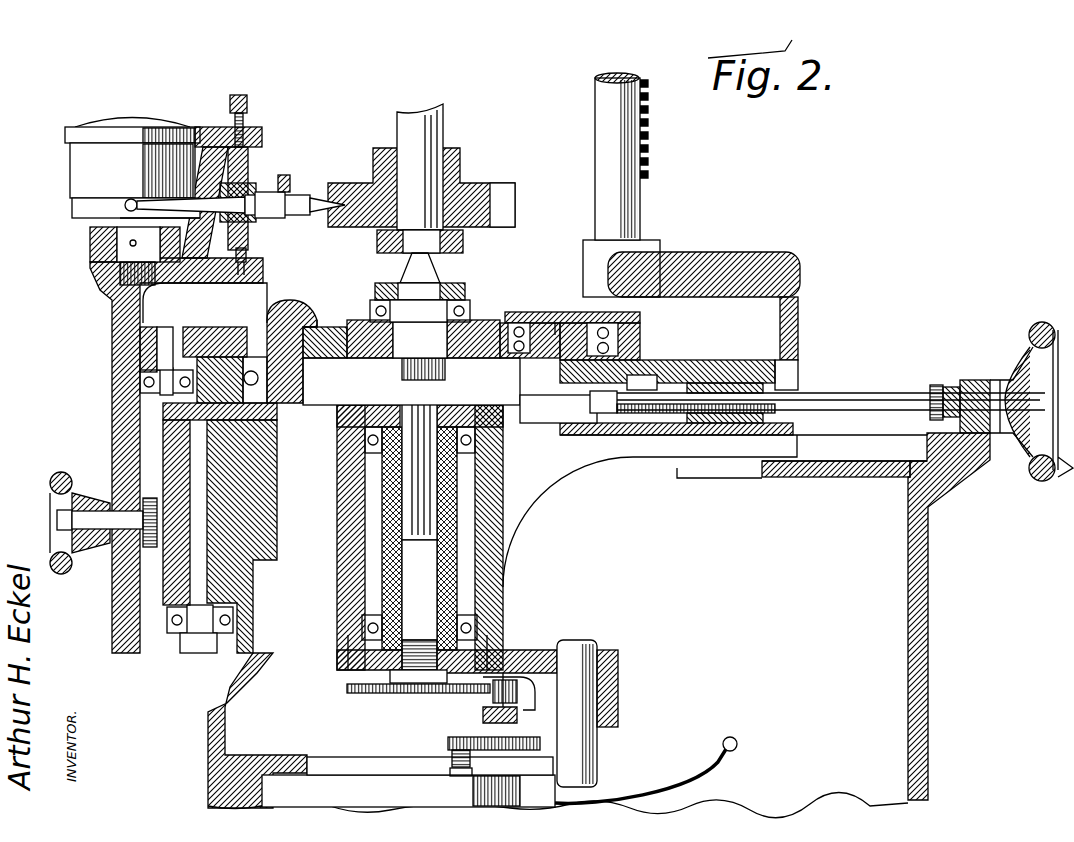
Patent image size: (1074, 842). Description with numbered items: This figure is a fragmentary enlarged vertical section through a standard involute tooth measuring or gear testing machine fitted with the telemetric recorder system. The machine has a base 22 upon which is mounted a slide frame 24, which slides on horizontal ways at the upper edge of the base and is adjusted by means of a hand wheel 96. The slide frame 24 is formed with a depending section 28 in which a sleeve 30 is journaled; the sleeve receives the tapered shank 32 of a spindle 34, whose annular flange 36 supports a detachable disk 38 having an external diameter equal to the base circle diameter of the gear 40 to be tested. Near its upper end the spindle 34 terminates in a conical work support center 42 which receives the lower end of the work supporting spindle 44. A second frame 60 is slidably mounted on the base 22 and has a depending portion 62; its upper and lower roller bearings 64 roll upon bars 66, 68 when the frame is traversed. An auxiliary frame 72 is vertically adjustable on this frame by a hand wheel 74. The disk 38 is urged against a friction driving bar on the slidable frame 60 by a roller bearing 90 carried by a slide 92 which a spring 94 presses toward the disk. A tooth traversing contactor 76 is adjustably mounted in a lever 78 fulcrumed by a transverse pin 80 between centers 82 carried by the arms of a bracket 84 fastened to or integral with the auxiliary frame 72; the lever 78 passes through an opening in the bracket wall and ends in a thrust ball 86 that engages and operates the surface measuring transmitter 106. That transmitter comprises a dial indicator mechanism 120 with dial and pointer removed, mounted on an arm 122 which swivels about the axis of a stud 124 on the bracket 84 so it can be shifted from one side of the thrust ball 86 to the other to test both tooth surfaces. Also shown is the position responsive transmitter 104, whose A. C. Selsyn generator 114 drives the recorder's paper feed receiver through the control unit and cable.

The base 22 is at (210, 728).
The slide frame 24 is at (740, 254).
The depending section 28 is at (483, 553).
The sleeve 30 is at (450, 523).
The tapered shank 32 is at (437, 480).
The spindle 34 is at (480, 320).
The annular flange 36 is at (375, 373).
The disk 38 is at (355, 323).
The gear 40 is at (463, 183).
The conical work support center 42 is at (400, 270).
The work supporting spindle 44 is at (440, 128).
The frame 60 is at (274, 285).
The depending portion 62 is at (183, 500).
The roller bearings 64 is at (125, 380).
The bar 66 is at (243, 622).
The bar 68 is at (267, 322).
The auxiliary frame 72 is at (110, 306).
The hand wheel 74 is at (63, 573).
The tooth traversing contactor 76 is at (310, 200).
The lever 78 is at (256, 186).
The transverse pin 80 is at (250, 160).
The centers 82 is at (246, 112).
The bracket 84 is at (198, 278).
The thrust ball 86 is at (143, 217).
The roller bearing 90 is at (620, 327).
The slide 92 is at (650, 362).
The spring 94 is at (675, 390).
The hand wheel 96 is at (1033, 332).
The position responsive transmitter 104 is at (430, 738).
The surface measuring transmitter 106 is at (51, 123).
The A. C. Selsyn generator 114 is at (420, 793).
The dial indicator mechanism 120 is at (75, 208).
The arm 122 is at (97, 247).
The stud 124 is at (123, 253).